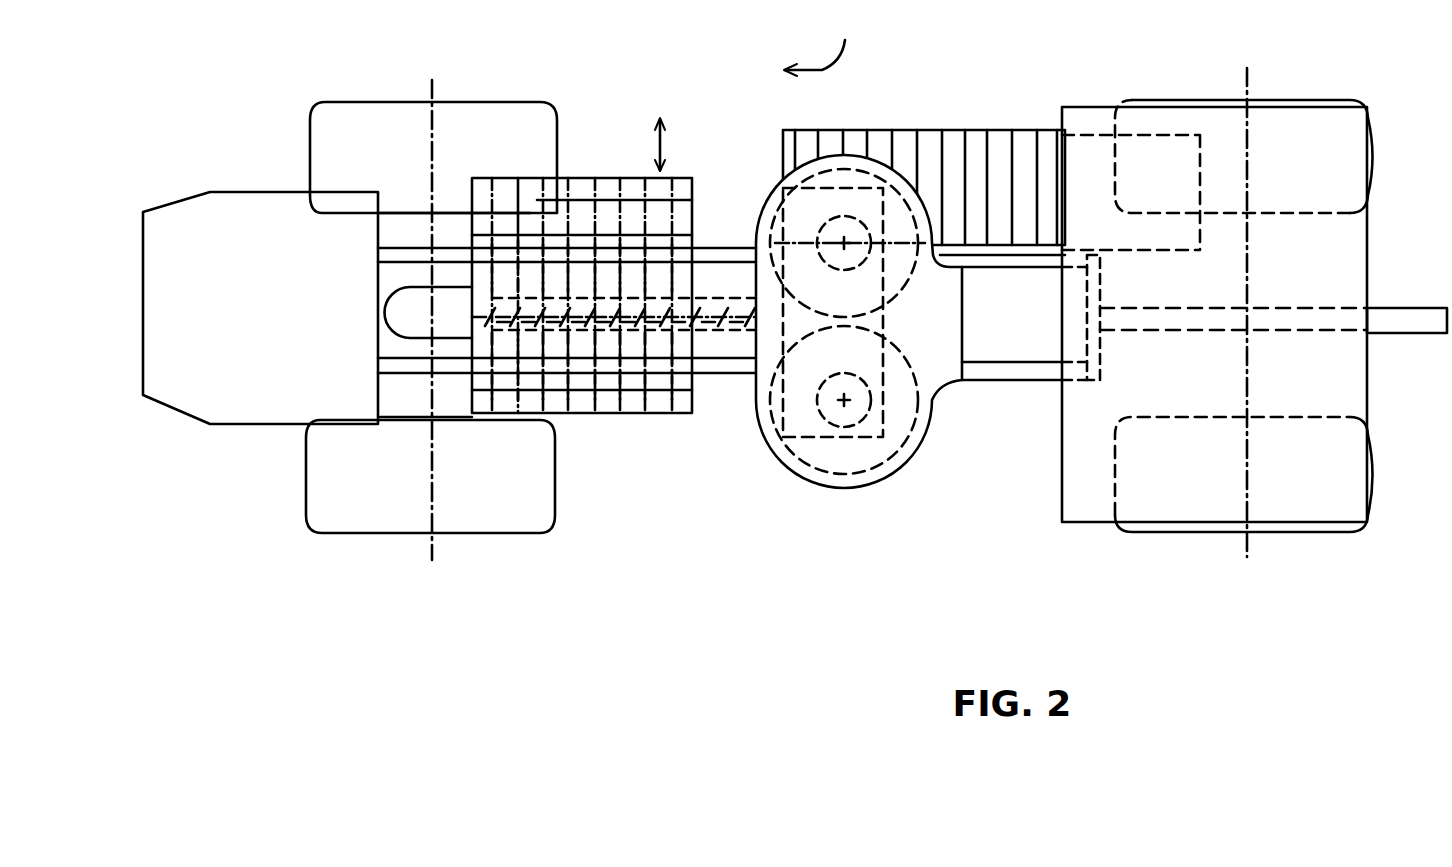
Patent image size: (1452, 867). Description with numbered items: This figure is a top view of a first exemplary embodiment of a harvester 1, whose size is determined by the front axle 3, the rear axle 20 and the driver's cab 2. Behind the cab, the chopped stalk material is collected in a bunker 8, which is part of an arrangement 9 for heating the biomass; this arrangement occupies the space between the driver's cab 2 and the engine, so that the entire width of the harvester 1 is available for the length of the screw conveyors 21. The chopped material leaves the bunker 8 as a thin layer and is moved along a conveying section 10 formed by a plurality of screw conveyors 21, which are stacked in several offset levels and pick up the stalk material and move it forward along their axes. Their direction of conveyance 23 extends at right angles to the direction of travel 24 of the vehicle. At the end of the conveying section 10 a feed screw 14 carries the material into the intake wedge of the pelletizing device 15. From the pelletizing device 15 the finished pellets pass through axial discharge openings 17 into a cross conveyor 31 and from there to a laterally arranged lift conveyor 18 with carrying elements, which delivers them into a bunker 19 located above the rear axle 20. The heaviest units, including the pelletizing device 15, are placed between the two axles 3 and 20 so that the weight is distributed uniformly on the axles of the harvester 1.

The harvester 1 is at (622, 100).
The driver's cab 2 is at (268, 392).
The front axle 3 is at (390, 122).
The bunker 8 is at (582, 402).
The arrangement for heating the biomass 9 is at (605, 172).
The conveying section 10 is at (623, 378).
The feed screw 14 is at (717, 297).
The pelletizing device 15 is at (838, 322).
The axial discharge openings 17 is at (868, 407).
The lift conveyor 18 is at (980, 150).
The bunker 19 is at (1068, 460).
The rear axle 20 is at (1247, 102).
The screw conveyors 21 is at (517, 383).
The direction of conveyance 23 is at (664, 158).
The direction of travel 24 is at (824, 39).
The cross conveyor 31 is at (812, 437).